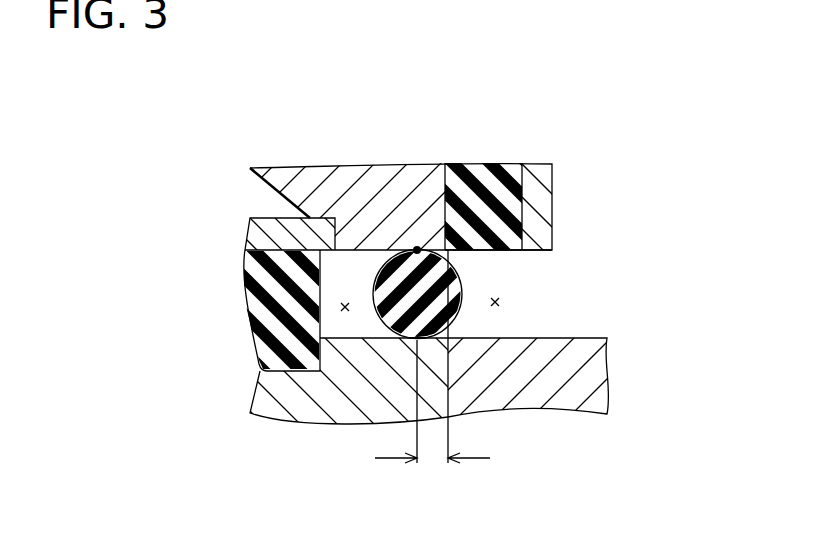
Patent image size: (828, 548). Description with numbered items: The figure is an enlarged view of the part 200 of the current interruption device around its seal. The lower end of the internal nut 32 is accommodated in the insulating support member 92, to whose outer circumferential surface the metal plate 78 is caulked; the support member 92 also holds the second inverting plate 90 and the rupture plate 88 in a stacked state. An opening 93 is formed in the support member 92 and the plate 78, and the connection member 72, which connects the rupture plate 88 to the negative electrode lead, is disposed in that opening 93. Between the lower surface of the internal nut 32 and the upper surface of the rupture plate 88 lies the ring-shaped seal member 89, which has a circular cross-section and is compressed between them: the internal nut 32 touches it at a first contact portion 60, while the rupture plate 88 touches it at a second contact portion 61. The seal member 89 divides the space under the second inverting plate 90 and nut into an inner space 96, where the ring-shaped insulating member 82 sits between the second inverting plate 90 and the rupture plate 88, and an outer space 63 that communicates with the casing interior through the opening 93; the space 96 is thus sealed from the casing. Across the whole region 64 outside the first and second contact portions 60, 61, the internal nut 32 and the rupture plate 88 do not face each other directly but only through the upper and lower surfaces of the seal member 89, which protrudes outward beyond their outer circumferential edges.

The part enclosed by a dotted line 200 is at (547, 113).
The internal nut 32 is at (325, 173).
The second inverting plate 90 is at (313, 237).
The support member 92 is at (503, 205).
The plate 78 is at (538, 237).
The opening 93 is at (500, 252).
The first contact portion 60 is at (418, 247).
The seal member 89 is at (398, 269).
The space 96 is at (345, 303).
The outer space 63 is at (497, 304).
The insulating member 82 is at (262, 312).
The rupture plate 88 is at (303, 388).
The connection member 72 is at (573, 390).
The second contact portion 61 is at (417, 342).
The region 64 is at (432, 373).